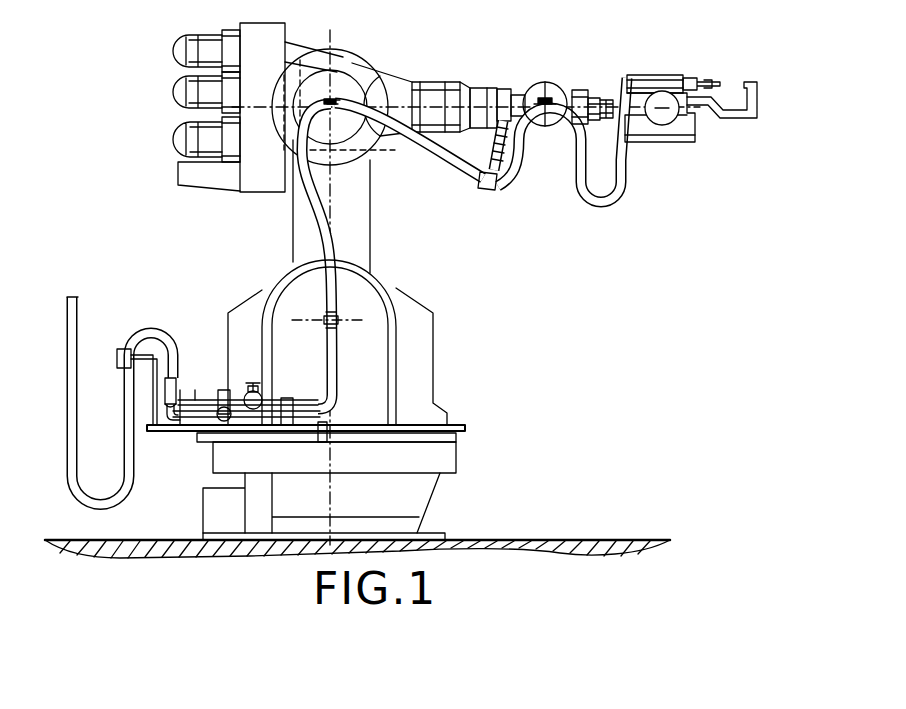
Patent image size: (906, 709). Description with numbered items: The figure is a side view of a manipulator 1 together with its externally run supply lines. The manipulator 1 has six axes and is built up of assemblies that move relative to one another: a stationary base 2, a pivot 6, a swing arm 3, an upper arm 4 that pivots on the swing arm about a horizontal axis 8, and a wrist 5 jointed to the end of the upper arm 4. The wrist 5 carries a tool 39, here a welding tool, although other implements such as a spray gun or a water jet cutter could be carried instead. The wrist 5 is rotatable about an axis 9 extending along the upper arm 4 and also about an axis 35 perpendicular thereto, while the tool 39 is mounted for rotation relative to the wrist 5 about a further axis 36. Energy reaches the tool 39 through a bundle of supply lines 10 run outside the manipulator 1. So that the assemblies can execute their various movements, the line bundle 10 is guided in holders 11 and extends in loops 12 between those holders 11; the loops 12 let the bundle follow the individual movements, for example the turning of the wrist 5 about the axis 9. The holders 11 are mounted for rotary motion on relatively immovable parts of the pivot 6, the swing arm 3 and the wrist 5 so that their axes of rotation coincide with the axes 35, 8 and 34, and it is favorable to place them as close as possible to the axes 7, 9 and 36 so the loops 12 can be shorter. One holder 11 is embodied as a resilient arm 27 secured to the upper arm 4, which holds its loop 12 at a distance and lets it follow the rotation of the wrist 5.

The manipulator 1 is at (140, 65).
The stationary base 2 is at (432, 498).
The swing arm 3 is at (360, 241).
The upper arm 4 is at (422, 82).
The wrist 5 is at (578, 80).
The pivot 6 is at (422, 375).
The axis 7 is at (333, 497).
The horizontal axis 8 is at (334, 100).
The axis 9 is at (480, 90).
The bundle of supply lines 10 is at (317, 208).
The holders 11 is at (544, 98).
The loops 12 is at (300, 138).
The resilient arm 27 is at (508, 182).
The axis 34 is at (335, 320).
The axis 35 is at (562, 88).
The axis 36 is at (605, 90).
The tool 39 is at (708, 77).